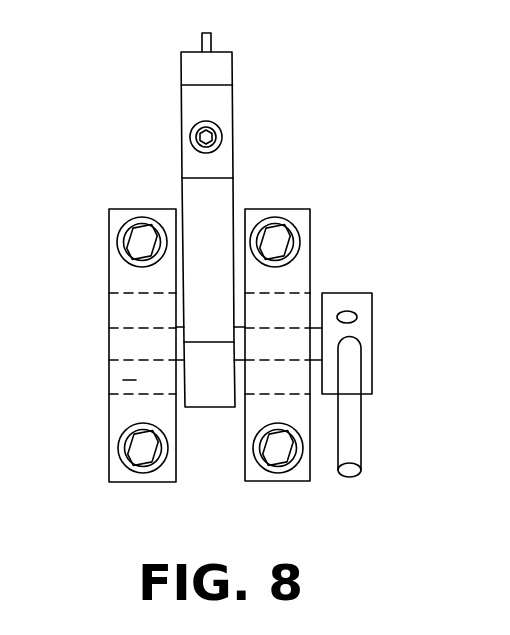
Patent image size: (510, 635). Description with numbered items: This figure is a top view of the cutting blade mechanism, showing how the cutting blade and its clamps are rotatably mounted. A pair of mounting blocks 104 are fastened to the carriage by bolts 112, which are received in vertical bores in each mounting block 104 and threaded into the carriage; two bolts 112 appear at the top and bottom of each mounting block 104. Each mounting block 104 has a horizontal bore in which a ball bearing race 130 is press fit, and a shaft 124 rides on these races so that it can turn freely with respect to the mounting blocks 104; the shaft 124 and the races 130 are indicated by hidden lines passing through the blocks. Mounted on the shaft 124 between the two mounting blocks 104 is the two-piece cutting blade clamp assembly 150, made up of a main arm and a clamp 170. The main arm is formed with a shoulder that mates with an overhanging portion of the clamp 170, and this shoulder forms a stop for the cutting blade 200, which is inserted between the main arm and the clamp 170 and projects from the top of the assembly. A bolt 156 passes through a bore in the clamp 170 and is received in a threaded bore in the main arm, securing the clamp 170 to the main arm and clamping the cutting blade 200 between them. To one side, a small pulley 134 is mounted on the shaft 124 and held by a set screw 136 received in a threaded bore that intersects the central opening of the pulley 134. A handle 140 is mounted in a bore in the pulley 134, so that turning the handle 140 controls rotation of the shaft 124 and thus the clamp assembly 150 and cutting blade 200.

The cutting blade 200 is at (244, 29).
The clamp 170 is at (243, 115).
The bolt 156 is at (156, 137).
The cutting blade clamp assembly 150 is at (241, 281).
The mounting block 104 is at (207, 345).
The bolt 112 is at (202, 357).
The shaft 124 is at (171, 343).
The ball bearing race 130 is at (208, 335).
The pulley 134 is at (382, 343).
The set screw 136 is at (391, 317).
The handle 140 is at (390, 407).